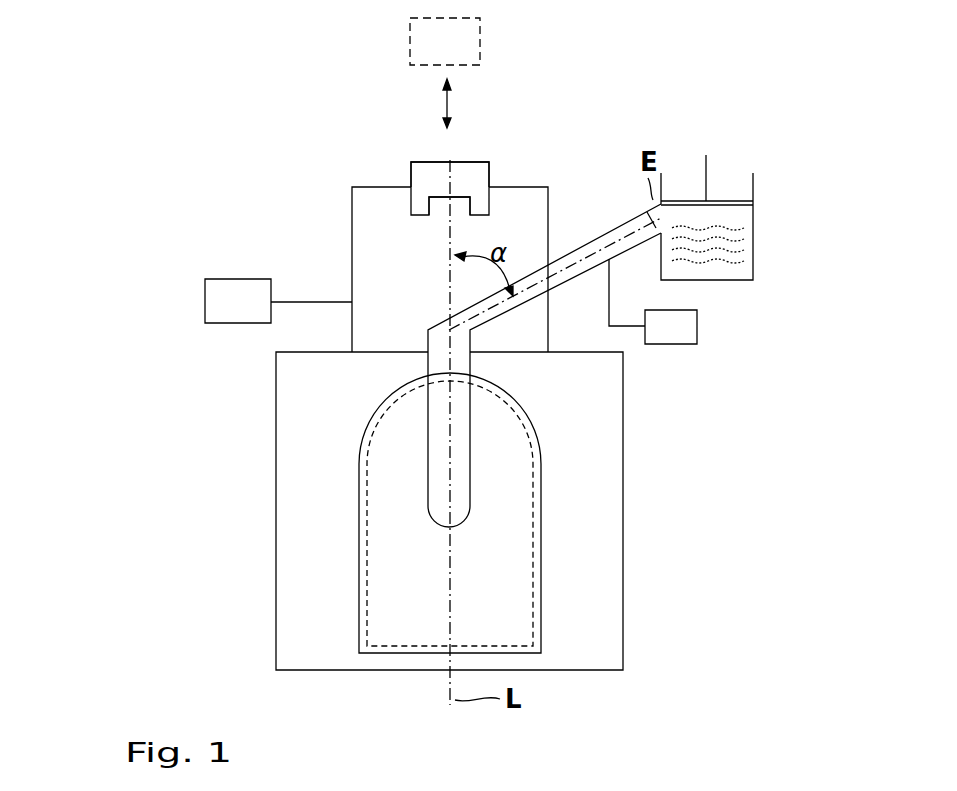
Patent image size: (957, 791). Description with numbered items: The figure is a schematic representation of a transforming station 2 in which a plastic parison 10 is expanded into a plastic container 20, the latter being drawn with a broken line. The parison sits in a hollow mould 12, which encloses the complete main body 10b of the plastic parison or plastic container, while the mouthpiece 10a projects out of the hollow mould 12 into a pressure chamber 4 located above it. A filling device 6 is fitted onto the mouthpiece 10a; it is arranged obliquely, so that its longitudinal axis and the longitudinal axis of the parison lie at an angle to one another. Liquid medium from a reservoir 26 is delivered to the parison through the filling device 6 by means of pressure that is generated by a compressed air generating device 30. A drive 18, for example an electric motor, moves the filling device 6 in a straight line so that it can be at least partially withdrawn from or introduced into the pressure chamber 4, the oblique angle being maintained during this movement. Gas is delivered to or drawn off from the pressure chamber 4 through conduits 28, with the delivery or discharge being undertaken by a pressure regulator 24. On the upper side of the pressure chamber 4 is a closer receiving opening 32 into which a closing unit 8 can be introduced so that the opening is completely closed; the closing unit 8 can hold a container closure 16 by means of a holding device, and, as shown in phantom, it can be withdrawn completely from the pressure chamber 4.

The transforming station 2 is at (192, 202).
The pressure chamber 4 is at (352, 205).
The filling device 6 is at (616, 240).
The closing unit 8 is at (485, 50).
The plastic parison 10 is at (458, 422).
The mouthpiece of the plastic parison/plastic container 10a is at (472, 338).
The main body of the plastic parison/plastic container 10b is at (472, 372).
The hollow mould 12 is at (610, 608).
The container closure 16 is at (432, 207).
The drive 18 is at (700, 332).
The plastic container 20 is at (525, 530).
The pressure regulator 24 is at (207, 302).
The reservoir for liquid medium 26 is at (745, 268).
The conduits 28 is at (306, 300).
The compressed air generating device 30 is at (718, 184).
The closer receiving opening 32 is at (411, 185).